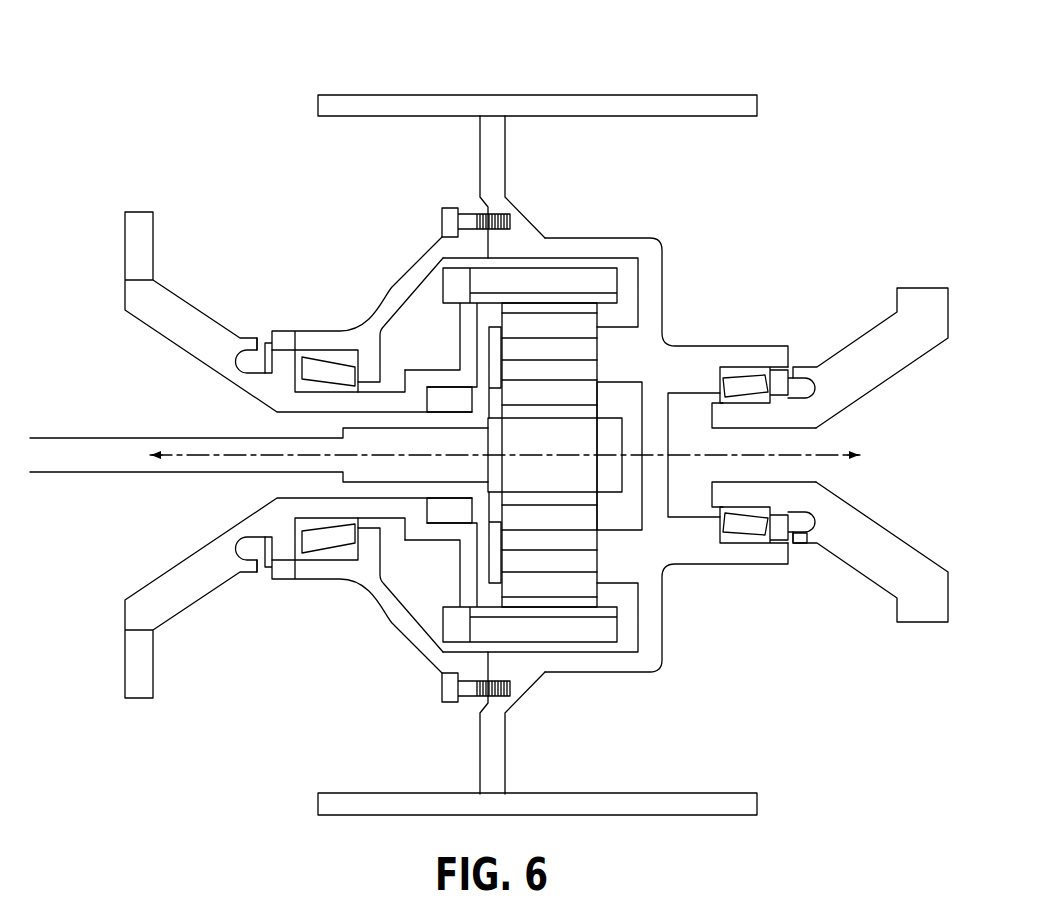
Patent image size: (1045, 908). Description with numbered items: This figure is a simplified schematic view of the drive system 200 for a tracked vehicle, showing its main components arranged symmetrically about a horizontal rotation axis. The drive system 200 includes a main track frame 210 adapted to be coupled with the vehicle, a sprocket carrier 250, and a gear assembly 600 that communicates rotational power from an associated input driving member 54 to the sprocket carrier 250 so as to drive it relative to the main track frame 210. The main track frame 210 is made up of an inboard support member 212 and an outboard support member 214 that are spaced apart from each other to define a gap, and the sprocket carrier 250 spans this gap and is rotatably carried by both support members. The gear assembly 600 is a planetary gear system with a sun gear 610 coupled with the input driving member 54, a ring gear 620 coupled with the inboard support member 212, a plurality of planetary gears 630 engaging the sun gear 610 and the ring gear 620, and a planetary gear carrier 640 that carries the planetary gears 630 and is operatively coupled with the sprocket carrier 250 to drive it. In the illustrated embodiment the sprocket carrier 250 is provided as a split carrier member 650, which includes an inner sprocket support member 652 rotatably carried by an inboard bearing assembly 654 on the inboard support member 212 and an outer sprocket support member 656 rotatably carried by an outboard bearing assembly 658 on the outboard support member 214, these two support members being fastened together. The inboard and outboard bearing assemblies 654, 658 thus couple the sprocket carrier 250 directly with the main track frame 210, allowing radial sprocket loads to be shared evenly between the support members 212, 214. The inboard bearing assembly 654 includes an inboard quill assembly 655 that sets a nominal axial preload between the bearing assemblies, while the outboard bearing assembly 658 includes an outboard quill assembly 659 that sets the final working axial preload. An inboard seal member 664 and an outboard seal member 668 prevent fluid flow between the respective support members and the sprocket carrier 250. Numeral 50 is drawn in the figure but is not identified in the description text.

The drive system 200 is at (788, 68).
The frame plate 50 is at (531, 80).
The gear assembly 600 is at (420, 155).
The sprocket carrier 250 is at (523, 226).
The split carrier member 650 is at (619, 237).
The planetary gear carrier 640 is at (626, 556).
The ring gear 620 is at (541, 282).
The planetary gears 630 is at (549, 358).
The sun gear 610 is at (563, 420).
The input driving member 54 is at (365, 430).
The inner sprocket support member 652 is at (386, 281).
The inboard quill assembly 655 is at (293, 560).
The inboard bearing assembly 654 is at (304, 358).
The inboard seal member 664 is at (252, 553).
The main track frame 210 is at (164, 333).
The inboard support member 212 is at (181, 599).
The outboard support member 214 is at (870, 592).
The outer sprocket support member 656 is at (662, 569).
The outboard bearing assembly 658 is at (753, 371).
The outboard seal member 668 is at (806, 523).
The outboard quill assembly 659 is at (827, 511).